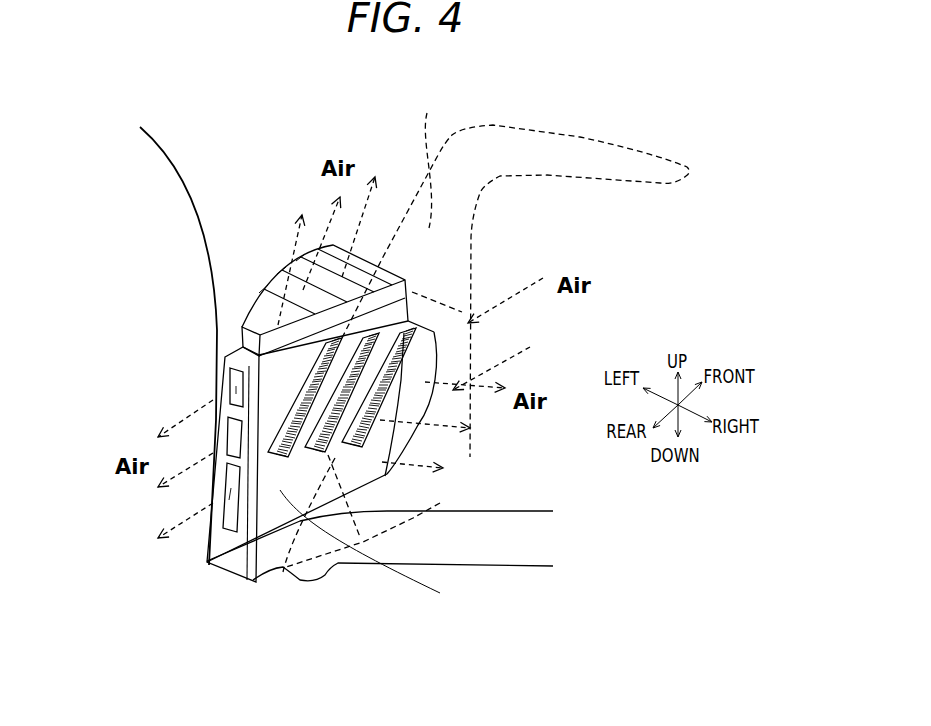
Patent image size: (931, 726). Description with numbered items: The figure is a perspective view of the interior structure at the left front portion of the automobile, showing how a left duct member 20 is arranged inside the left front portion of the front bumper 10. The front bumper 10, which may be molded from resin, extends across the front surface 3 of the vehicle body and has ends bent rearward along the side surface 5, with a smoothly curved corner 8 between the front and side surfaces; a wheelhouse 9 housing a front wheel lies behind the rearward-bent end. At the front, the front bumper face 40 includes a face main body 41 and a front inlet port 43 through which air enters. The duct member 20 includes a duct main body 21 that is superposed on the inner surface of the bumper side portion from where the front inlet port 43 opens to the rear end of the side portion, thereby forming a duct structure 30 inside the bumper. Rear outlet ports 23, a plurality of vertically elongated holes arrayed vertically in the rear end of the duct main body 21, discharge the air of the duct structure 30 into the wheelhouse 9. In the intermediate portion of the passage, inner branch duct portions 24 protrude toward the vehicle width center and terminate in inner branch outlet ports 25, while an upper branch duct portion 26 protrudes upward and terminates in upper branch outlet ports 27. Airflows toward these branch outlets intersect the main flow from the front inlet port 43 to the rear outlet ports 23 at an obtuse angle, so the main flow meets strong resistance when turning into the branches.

The front surface 3 is at (538, 565).
The side surface 5 is at (188, 178).
The corner 8 is at (283, 572).
The wheelhouse 9 is at (138, 577).
The front bumper 10 is at (535, 468).
The duct member 20 is at (250, 262).
The duct main body 21 is at (372, 559).
The rear outlet ports 23 is at (220, 373).
The inner branch duct portions 24 is at (407, 333).
The inner branch outlet ports 25 is at (440, 503).
The upper branch duct portion 26 is at (233, 330).
The upper branch outlet ports 27 is at (263, 300).
The duct structure 30 is at (222, 362).
The front bumper face 40 is at (635, 138).
The face main body 41 is at (442, 154).
The front inlet port 43 is at (412, 347).